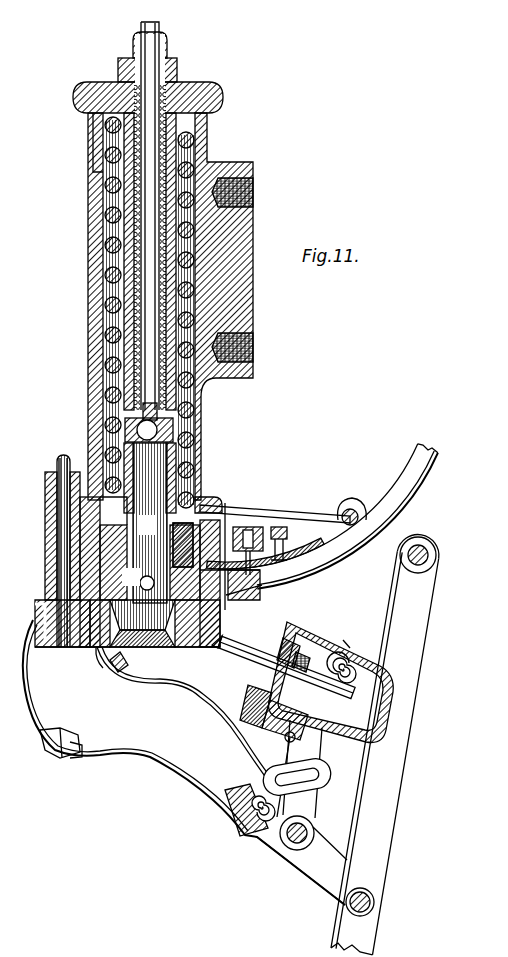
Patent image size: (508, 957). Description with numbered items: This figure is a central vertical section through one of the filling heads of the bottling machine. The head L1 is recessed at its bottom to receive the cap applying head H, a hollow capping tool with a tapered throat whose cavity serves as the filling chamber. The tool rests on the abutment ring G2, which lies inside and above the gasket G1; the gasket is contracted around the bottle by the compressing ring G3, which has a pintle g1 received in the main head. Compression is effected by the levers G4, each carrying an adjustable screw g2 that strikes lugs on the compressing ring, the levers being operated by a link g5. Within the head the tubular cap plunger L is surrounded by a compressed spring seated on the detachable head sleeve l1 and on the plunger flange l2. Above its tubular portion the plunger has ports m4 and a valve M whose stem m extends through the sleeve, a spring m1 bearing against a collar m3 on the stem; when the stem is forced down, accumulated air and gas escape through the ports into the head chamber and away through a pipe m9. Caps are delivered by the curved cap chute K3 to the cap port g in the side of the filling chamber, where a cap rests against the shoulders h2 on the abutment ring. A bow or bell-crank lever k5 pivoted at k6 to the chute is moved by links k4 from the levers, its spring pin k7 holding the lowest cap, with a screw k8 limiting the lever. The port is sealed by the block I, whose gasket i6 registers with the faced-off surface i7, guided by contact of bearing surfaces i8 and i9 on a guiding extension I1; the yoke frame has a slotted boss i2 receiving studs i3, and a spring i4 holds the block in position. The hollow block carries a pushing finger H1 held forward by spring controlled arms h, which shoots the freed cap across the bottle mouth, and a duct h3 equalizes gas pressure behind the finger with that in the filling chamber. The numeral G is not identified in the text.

The stem m is at (160, 27).
The collar m3 is at (133, 42).
The detachable head sleeve l1 is at (198, 83).
The head L1 is at (90, 308).
The spring m1 is at (100, 197).
The ports m4 is at (140, 416).
The valve M is at (125, 430).
The pipe m9 is at (212, 465).
The plunger flange l2 is at (218, 500).
The pintle g1 is at (60, 466).
The abutment ring G2 is at (200, 583).
The cap applying head H is at (100, 549).
The gasket G1 is at (132, 647).
The compressing ring G3 is at (187, 647).
The cap plunger L is at (150, 523).
The pivot pin G is at (138, 579).
The lugs or shoulders h2 is at (164, 612).
The cap port g is at (216, 556).
The guiding extension I1 is at (255, 508).
The pivot k6 is at (358, 506).
The screw k8 is at (274, 528).
The bearing surface i8 is at (296, 527).
The bow or bell-crank lever k5 is at (266, 546).
The faced-off surface i7 is at (227, 607).
The spring pin k7 is at (247, 572).
The cap chute K3 is at (407, 477).
The links k4 is at (400, 593).
The link g5 is at (347, 926).
The block I is at (331, 682).
The spring controlled arms h is at (345, 640).
The bearing surface i9 is at (338, 660).
The gasket i6 is at (283, 638).
The pushing finger H1 is at (281, 667).
The duct h3 is at (268, 712).
The arms or levers G4 is at (184, 762).
The adjustable screw g2 is at (112, 661).
The studs i3 is at (280, 780).
The slotted boss i2 is at (328, 777).
The spring i4 is at (288, 740).